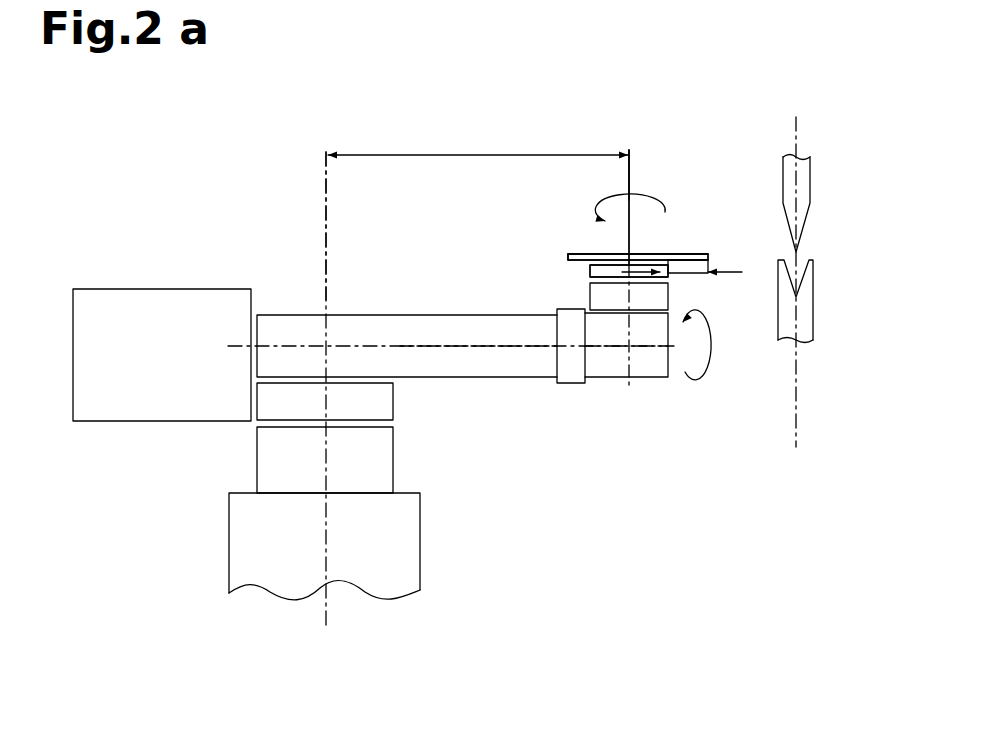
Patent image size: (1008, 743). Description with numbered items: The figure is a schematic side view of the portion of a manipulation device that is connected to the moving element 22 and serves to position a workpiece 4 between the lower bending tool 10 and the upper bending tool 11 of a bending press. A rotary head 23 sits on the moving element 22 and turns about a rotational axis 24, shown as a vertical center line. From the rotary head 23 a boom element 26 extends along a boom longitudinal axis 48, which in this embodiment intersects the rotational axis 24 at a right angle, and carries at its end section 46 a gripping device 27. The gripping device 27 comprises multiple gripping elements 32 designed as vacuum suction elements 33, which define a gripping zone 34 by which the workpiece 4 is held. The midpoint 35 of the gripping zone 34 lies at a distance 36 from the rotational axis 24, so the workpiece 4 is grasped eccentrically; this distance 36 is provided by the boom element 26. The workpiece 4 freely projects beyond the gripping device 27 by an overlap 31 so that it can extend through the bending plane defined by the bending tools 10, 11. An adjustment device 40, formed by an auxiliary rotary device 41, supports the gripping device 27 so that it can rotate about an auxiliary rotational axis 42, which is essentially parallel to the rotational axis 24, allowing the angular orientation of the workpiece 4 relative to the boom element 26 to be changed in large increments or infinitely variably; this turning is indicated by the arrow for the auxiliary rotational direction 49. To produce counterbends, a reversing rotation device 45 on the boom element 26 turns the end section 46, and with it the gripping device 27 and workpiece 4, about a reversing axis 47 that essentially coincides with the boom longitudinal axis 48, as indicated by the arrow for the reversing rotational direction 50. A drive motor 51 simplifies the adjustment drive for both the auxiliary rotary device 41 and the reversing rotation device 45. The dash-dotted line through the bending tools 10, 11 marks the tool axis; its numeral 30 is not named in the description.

The workpiece 4 is at (577, 258).
The lower bending tool 10 is at (800, 322).
The upper bending tool 11 is at (802, 188).
The moving element 22 is at (250, 540).
The rotary head 23 is at (267, 457).
The rotational axis 24 is at (322, 172).
The boom element 26 is at (455, 365).
The gripping device 27 is at (602, 298).
The punching axis 30 is at (800, 126).
The overlap 31 is at (684, 268).
The gripping elements 32 is at (657, 262).
The vacuum suction elements 33 is at (638, 257).
The gripping zone 34 is at (566, 263).
The midpoint of the gripping zone 35 is at (642, 252).
The distance 36 is at (487, 157).
The adjustment device 40 is at (561, 280).
The auxiliary rotary device 41 is at (629, 271).
The auxiliary rotational axis 42 is at (633, 160).
The reversing rotation device 45 is at (575, 372).
The end section 46 is at (642, 367).
The reversing axis 47 is at (604, 350).
The boom longitudinal axis 48 is at (492, 350).
The auxiliary rotational direction 49 is at (622, 190).
The reversing rotational direction 50 is at (717, 346).
The drive motor 51 is at (155, 330).